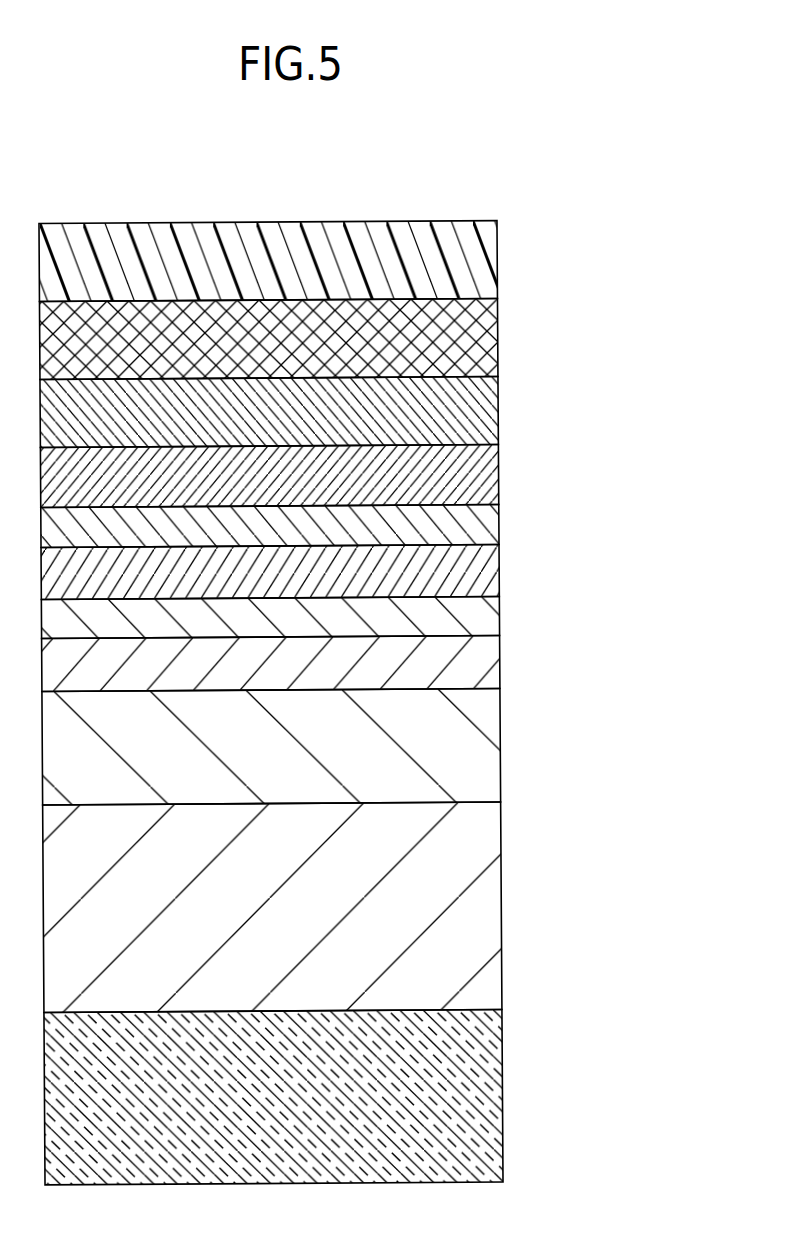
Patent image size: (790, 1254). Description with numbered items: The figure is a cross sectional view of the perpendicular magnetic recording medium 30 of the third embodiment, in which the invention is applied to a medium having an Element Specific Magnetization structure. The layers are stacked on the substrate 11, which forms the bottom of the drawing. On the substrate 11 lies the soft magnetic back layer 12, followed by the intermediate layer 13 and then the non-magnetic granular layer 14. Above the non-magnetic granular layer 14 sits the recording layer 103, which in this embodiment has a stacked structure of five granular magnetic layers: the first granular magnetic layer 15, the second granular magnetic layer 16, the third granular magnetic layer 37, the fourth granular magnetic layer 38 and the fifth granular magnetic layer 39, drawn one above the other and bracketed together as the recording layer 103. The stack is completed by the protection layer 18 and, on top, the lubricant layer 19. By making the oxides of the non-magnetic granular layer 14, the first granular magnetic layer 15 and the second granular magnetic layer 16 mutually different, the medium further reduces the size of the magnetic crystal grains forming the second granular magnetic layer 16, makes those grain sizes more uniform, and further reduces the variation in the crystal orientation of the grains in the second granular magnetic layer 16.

The perpendicular magnetic recording medium 30 is at (111, 148).
The substrate 11 is at (487, 1108).
The soft magnetic back layer 12 is at (485, 910).
The intermediate layer 13 is at (483, 748).
The non-magnetic granular layer 14 is at (482, 667).
The first granular magnetic layer 15 is at (482, 618).
The second granular magnetic layer 16 is at (482, 574).
The third granular magnetic layer 37 is at (482, 523).
The fourth granular magnetic layer 38 is at (478, 471).
The fifth granular magnetic layer 39 is at (481, 409).
The recording layer 103 is at (625, 378).
The protection layer 18 is at (478, 339).
The lubricant layer 19 is at (480, 260).